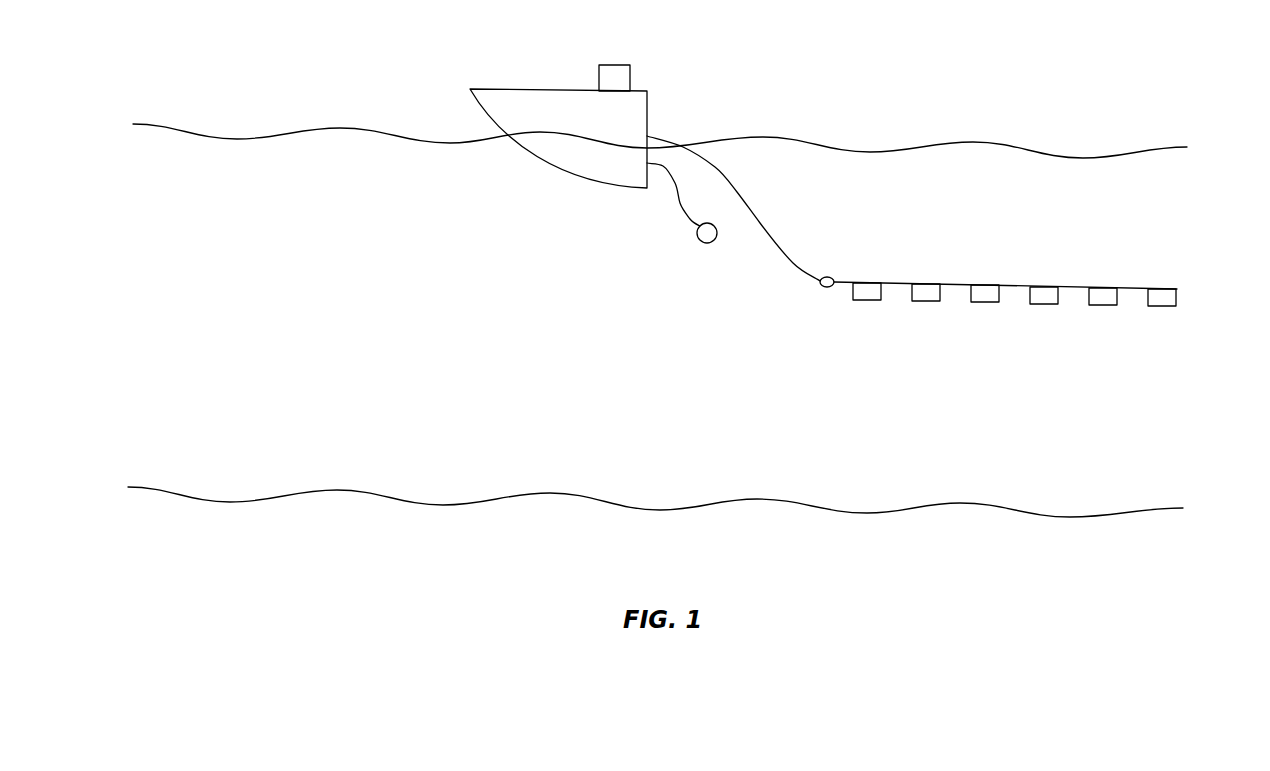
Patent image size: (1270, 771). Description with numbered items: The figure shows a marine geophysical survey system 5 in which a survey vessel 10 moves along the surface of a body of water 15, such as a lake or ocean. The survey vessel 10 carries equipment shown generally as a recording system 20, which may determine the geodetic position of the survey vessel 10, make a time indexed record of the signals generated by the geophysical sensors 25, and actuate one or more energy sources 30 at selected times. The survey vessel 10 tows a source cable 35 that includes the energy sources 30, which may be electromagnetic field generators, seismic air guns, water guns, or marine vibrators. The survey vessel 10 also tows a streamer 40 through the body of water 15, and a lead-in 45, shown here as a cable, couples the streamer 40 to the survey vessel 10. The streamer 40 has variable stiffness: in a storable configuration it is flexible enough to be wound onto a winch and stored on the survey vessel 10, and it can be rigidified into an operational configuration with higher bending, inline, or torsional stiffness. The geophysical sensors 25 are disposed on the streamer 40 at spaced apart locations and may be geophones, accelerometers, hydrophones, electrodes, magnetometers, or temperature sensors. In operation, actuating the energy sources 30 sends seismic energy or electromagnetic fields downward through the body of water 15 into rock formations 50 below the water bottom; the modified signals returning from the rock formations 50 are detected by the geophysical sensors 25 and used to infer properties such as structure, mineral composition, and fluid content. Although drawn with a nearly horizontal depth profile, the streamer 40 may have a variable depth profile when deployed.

The marine geophysical survey system 5 is at (642, 271).
The survey vessel 10 is at (523, 88).
The body of water 15 is at (995, 143).
The recording system 20 is at (632, 77).
The geophysical sensors 25 is at (868, 300).
The energy sources 30 is at (707, 243).
The source cable 35 is at (677, 203).
The streamer 40 is at (1134, 285).
The lead-in 45 is at (758, 220).
The rock formations 50 is at (903, 590).